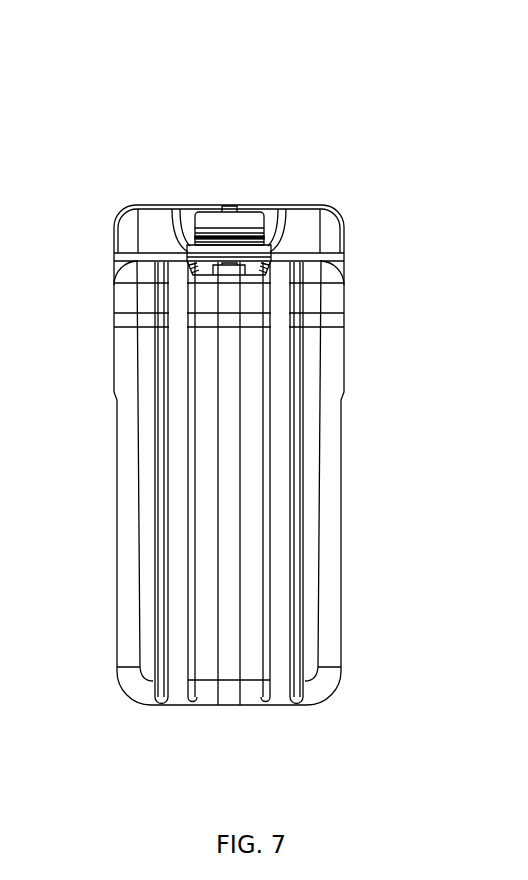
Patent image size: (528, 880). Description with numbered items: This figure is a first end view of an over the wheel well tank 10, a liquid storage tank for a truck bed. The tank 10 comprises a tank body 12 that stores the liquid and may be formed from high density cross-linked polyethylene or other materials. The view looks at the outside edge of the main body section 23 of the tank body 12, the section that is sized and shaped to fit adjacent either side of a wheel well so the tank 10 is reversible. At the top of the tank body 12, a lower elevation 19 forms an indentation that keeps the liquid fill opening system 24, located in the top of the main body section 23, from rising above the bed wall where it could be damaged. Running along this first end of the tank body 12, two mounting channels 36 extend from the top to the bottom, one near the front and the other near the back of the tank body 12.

The over the wheel well tank 10 is at (292, 152).
The tank body 12 is at (332, 470).
The lower elevation 19 is at (330, 253).
The main body section 23 is at (330, 382).
The liquid fill opening system 24 is at (210, 225).
The mounting channels 36 is at (175, 667).